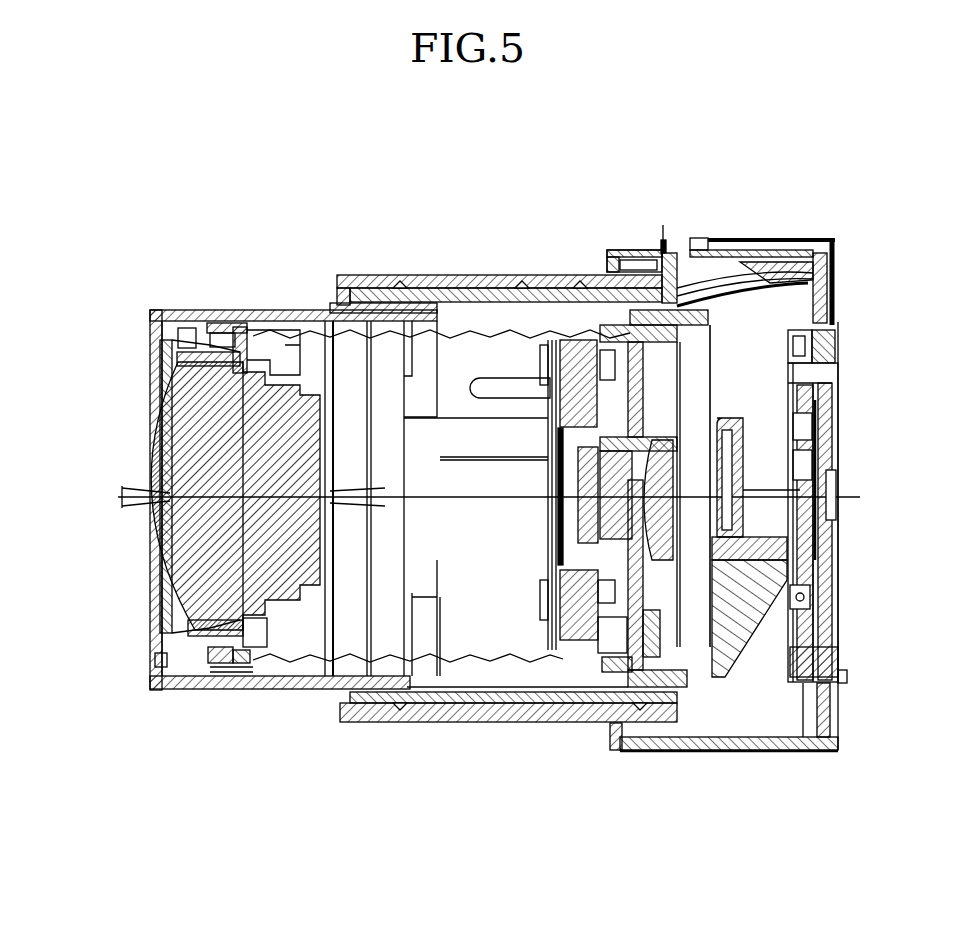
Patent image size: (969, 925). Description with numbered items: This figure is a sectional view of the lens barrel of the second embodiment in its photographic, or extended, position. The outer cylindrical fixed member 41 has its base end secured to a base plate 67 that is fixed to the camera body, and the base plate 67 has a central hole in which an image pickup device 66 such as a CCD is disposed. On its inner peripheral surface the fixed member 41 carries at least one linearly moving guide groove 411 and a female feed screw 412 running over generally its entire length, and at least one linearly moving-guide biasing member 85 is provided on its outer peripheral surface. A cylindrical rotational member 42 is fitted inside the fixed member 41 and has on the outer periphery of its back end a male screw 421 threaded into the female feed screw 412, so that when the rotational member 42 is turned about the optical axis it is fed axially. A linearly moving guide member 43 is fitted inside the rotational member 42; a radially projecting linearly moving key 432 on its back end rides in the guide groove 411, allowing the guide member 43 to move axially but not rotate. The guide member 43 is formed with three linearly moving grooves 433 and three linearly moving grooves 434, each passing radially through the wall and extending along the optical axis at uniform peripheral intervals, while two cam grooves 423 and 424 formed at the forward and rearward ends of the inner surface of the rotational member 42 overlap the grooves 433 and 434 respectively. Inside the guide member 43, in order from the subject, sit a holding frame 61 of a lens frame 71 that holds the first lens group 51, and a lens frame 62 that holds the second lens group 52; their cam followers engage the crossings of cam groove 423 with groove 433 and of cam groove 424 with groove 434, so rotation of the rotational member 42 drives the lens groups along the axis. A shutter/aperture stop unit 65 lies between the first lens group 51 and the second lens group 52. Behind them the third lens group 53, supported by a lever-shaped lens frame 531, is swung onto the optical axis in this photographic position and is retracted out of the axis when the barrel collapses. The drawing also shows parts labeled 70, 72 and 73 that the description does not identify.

The fixed member 41 is at (782, 745).
The rotational member 42 is at (465, 280).
The linearly moving guide member 43 is at (400, 296).
The first lens group 51 is at (270, 425).
The second lens group 52 is at (657, 515).
The third lens group 53 is at (840, 587).
The holding frame 61 is at (229, 318).
The lens frame 62 is at (631, 357).
The shutter/aperture stop unit 65 is at (578, 603).
The image pickup device 66 is at (838, 557).
The base plate 67 is at (838, 322).
The front barrel 70 is at (513, 662).
The lens frame 71 is at (157, 312).
The retaining ring 72 is at (207, 360).
The spacer ring 73 is at (237, 342).
The linearly moving-guide biasing member 85 is at (667, 220).
The linearly moving guide groove 411 is at (710, 262).
The female feed screw 412 is at (762, 250).
The male screw 421 is at (643, 250).
The cam groove 423 is at (522, 283).
The cam groove 424 is at (580, 285).
The linearly moving key 432 is at (670, 253).
The linearly moving groove 433 is at (474, 447).
The linearly moving groove 434 is at (482, 387).
The lens frame 531 is at (735, 422).